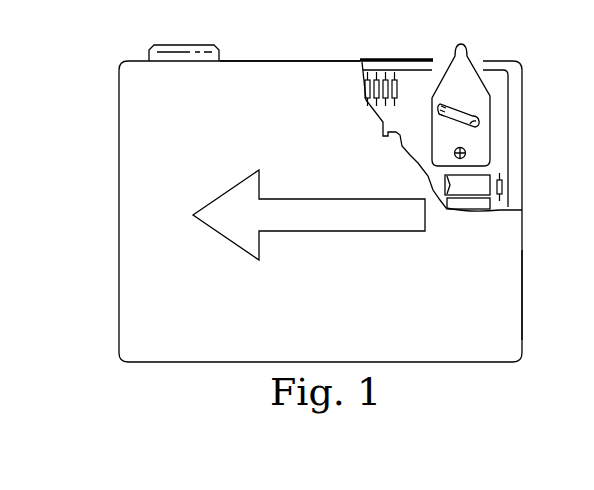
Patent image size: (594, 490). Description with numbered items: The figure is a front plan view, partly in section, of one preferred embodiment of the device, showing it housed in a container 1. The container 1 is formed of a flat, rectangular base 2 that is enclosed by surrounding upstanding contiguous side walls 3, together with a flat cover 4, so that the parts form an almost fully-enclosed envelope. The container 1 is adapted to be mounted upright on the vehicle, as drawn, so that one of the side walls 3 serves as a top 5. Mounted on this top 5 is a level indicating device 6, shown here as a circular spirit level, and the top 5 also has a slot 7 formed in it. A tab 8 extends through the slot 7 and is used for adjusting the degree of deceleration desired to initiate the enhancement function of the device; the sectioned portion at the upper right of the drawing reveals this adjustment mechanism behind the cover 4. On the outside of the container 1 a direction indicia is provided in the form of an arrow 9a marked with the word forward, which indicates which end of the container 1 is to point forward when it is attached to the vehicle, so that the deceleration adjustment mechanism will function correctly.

The container 1 is at (133, 107).
The base 2 is at (512, 88).
The side walls 3 is at (391, 60).
The cover 4 is at (508, 313).
The top 5 is at (280, 61).
The level indicating device 6 is at (184, 45).
The slot 7 is at (445, 59).
The tab 8 is at (463, 50).
The arrow 9a is at (237, 227).